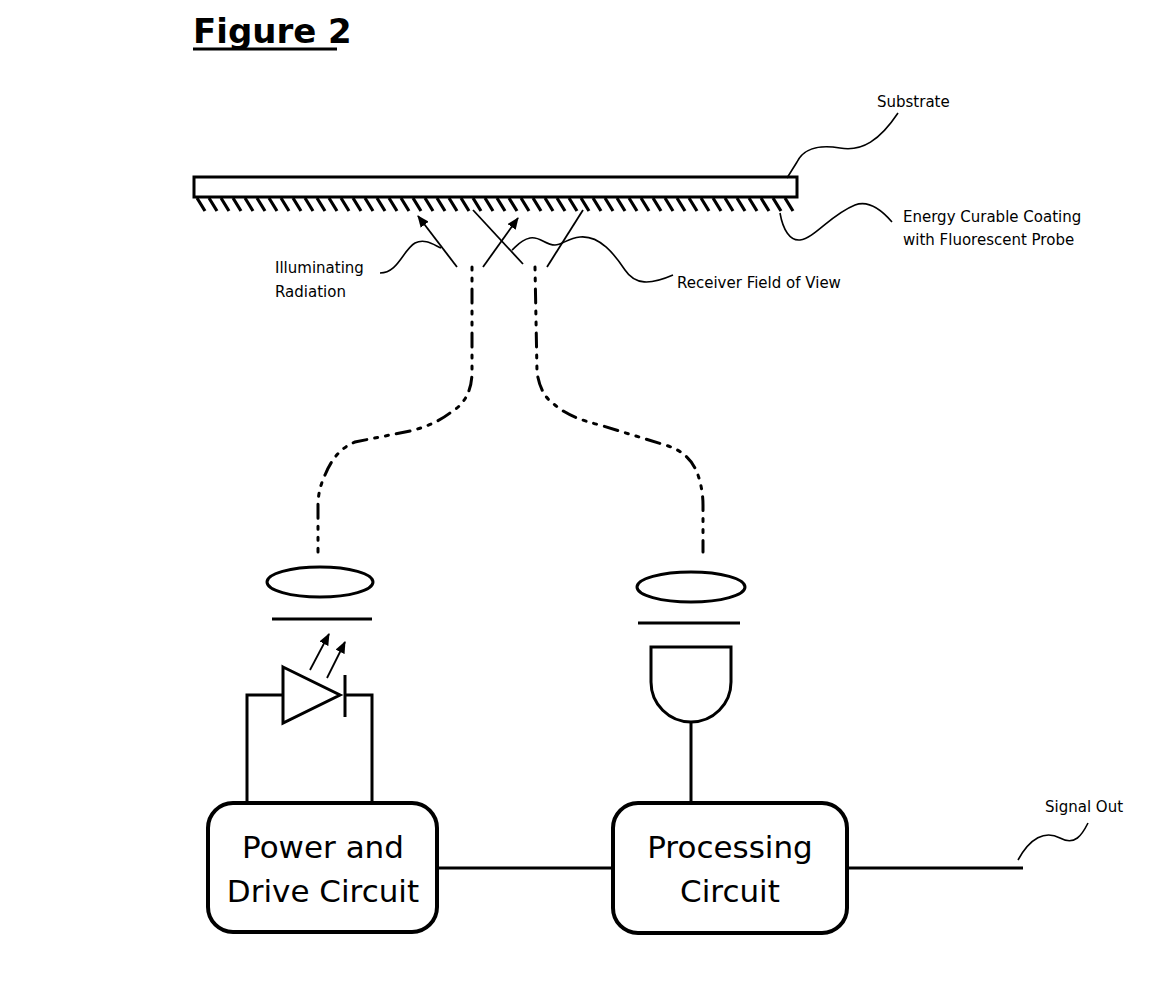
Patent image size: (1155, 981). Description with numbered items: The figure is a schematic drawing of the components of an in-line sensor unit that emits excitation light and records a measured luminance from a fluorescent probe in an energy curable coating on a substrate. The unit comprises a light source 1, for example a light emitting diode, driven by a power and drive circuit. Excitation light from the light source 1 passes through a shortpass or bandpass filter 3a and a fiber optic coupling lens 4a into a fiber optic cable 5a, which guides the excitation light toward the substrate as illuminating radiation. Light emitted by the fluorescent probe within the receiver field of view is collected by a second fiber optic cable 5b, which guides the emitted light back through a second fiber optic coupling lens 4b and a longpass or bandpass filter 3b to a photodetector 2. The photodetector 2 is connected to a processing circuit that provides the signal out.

The light source 1 is at (282, 692).
The photodetector 2 is at (732, 691).
The shortpass or bandpass filter 3a is at (272, 618).
The longpass or bandpass filter 3b is at (742, 623).
The fiber optic coupling lens 4a is at (278, 566).
The fiber optic coupling lens 4b is at (743, 582).
The fiber optic cable 5a is at (368, 432).
The fiber optic cable 5b is at (680, 435).